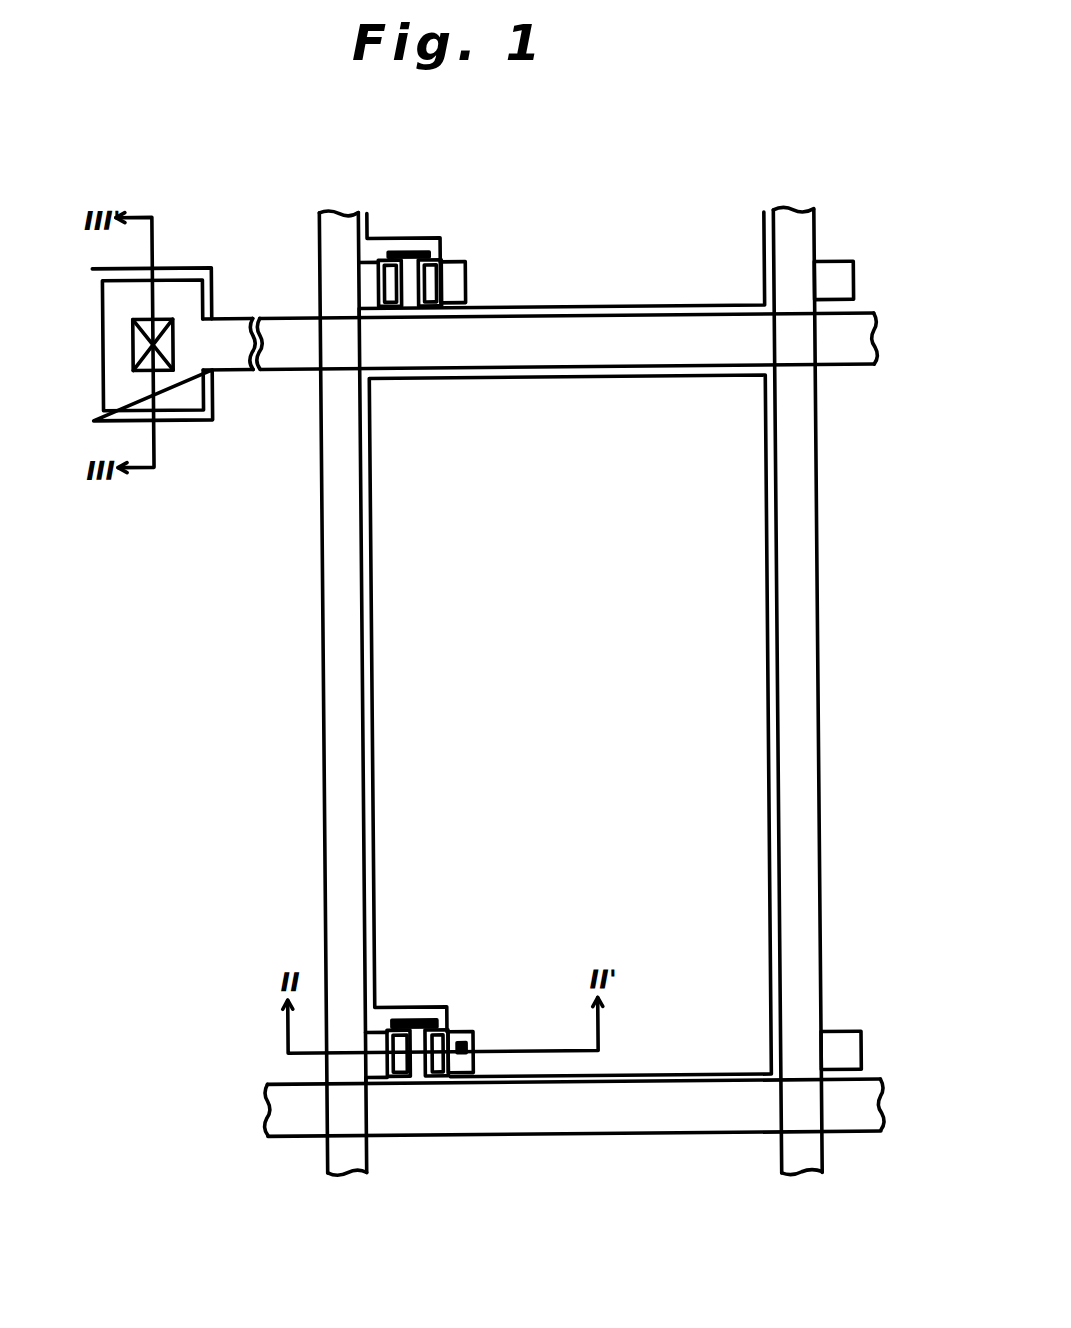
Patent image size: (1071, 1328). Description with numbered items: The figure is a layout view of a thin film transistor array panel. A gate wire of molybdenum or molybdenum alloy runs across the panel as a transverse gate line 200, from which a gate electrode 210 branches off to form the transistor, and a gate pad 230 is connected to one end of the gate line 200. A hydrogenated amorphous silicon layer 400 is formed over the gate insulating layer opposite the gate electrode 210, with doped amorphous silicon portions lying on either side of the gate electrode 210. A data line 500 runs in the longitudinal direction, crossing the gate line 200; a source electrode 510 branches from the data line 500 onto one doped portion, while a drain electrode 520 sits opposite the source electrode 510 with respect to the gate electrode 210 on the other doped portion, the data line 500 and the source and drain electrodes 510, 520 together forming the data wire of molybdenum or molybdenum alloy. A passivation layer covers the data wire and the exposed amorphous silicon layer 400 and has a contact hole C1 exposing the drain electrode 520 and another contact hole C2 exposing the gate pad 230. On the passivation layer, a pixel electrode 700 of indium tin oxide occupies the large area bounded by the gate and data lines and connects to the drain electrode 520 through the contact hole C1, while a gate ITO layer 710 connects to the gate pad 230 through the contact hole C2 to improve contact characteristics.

The gate line 200 is at (293, 316).
The gate electrode 210 is at (411, 1020).
The gate pad 230 is at (186, 277).
The hydrogenated amorphous silicon layer 400 is at (438, 1029).
The data line 500 is at (324, 603).
The source electrode 510 is at (407, 1076).
The drain electrode 520 is at (464, 1032).
The pixel electrode 700 is at (372, 736).
The gate ITO layer 710 is at (191, 417).
The contact hole C1 is at (462, 1051).
The contact hole C2 is at (120, 344).